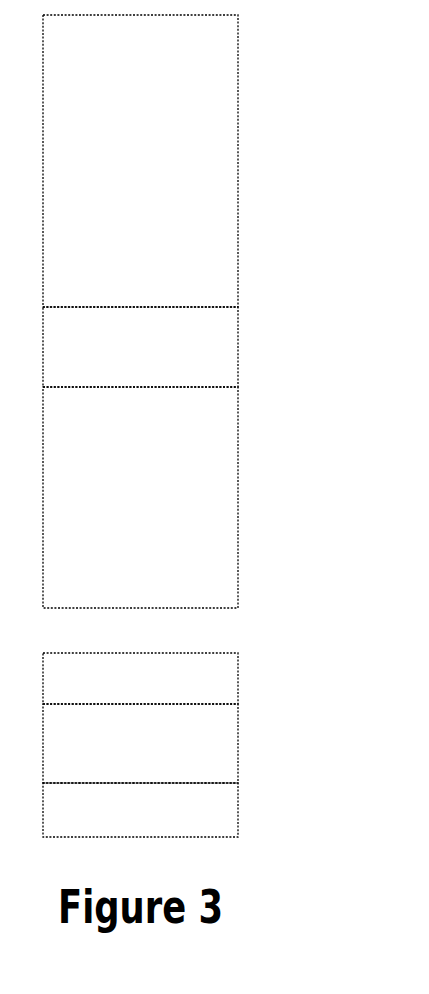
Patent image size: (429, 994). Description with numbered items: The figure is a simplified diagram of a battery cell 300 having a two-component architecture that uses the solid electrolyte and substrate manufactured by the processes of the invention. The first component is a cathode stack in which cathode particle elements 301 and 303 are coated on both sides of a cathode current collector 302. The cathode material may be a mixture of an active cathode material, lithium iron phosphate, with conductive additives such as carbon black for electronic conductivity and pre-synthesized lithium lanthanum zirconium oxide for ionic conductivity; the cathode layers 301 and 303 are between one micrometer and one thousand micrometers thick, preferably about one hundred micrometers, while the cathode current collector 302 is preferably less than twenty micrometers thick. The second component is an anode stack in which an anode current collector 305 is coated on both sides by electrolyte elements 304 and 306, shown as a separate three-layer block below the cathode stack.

The battery cell 300 is at (333, 242).
The cathode particle element 301 is at (129, 170).
The cathode current collector 302 is at (129, 354).
The cathode particle element 303 is at (129, 502).
The electrolyte element 304 is at (129, 684).
The anode current collector 305 is at (129, 752).
The electrolyte element 306 is at (129, 818).